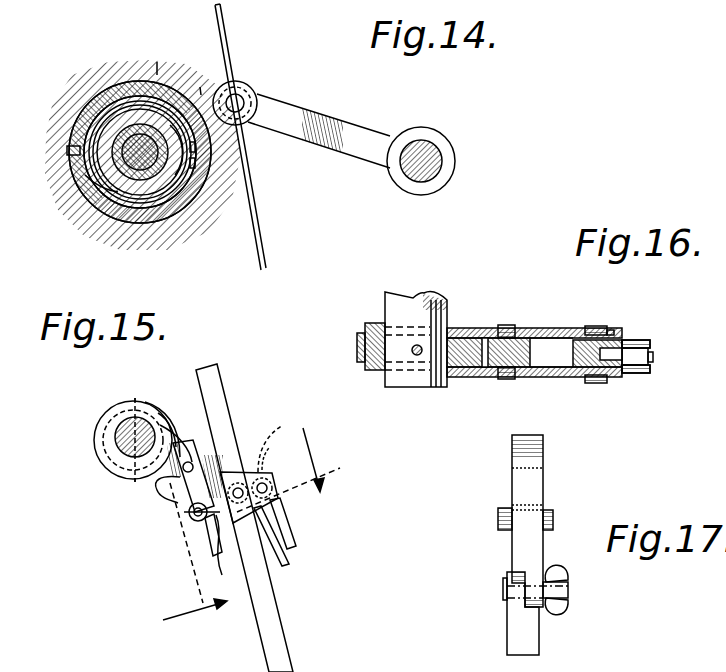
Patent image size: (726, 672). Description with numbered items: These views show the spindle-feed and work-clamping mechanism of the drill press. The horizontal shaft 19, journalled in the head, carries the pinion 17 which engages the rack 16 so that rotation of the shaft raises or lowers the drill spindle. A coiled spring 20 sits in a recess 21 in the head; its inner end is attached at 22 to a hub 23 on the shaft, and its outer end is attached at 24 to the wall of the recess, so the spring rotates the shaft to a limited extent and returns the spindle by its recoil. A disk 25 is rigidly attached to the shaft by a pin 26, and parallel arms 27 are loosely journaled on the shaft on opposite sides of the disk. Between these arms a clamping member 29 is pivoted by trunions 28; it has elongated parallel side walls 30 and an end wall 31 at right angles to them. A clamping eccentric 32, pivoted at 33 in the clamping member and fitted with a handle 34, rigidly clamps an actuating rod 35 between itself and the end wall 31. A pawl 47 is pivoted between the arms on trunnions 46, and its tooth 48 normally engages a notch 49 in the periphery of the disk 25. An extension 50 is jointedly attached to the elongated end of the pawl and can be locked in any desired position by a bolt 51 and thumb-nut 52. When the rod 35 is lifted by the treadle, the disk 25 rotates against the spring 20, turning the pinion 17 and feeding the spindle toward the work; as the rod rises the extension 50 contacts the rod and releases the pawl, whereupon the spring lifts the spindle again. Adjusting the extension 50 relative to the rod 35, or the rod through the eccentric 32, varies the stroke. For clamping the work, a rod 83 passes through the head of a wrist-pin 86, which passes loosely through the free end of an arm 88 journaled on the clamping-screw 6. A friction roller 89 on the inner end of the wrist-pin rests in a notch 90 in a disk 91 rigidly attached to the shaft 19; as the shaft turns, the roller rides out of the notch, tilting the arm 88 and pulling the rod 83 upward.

In FIG. 14, the clamping-screw 6 is at (427, 147).
In FIG. 15, the rack 16 is at (302, 470).
In FIG. 15, the pinion 17 is at (195, 562).
In FIG. 14, the horizontal shaft 19 is at (112, 143).
In FIG. 16, the horizontal shaft 19 is at (423, 292).
In FIG. 15, the horizontal shaft 19 is at (120, 430).
In FIG. 14, the coiled spring 20 is at (118, 118).
In FIG. 14, the recess 21 is at (103, 190).
In FIG. 14, the inner end attachment of spring 22 is at (172, 170).
In FIG. 14, the hub 23 is at (144, 126).
In FIG. 14, the outer end attachment of spring 24 is at (222, 165).
In FIG. 16, the disk 25 is at (360, 342).
In FIG. 15, the disk 25 is at (98, 454).
In FIG. 16, the pin 26 is at (414, 357).
In FIG. 15, the pin 26 is at (158, 470).
In FIG. 16, the parallel arms 27 is at (550, 328).
In FIG. 15, the parallel arms 27 is at (221, 467).
In FIG. 16, the trunions 28 is at (597, 327).
In FIG. 15, the trunions 28 is at (239, 488).
In FIG. 16, the clamping member 29 is at (675, 343).
In FIG. 15, the clamping member 29 is at (280, 457).
In FIG. 16, the side walls 30 is at (622, 337).
In FIG. 15, the side walls 30 is at (277, 486).
In FIG. 16, the end wall 31 is at (560, 365).
In FIG. 15, the end wall 31 is at (223, 553).
In FIG. 16, the clamping eccentric 32 is at (653, 355).
In FIG. 15, the clamping eccentric 32 is at (278, 441).
In FIG. 16, the pivot of eccentric 33 is at (637, 335).
In FIG. 15, the pivot of eccentric 33 is at (278, 553).
In FIG. 15, the handle 34 is at (297, 547).
In FIG. 16, the actuating rod 35 is at (575, 327).
In FIG. 15, the actuating rod 35 is at (287, 644).
In FIG. 16, the trunnions 46 is at (510, 327).
In FIG. 15, the trunnions 46 is at (187, 462).
In FIG. 17, the trunnions 46 is at (500, 517).
In FIG. 16, the pawl 47 is at (482, 367).
In FIG. 15, the pawl 47 is at (210, 460).
In FIG. 17, the pawl 47 is at (520, 487).
In FIG. 15, the tooth 48 is at (158, 410).
In FIG. 17, the tooth 48 is at (543, 447).
In FIG. 15, the notch 49 is at (163, 413).
In FIG. 15, the extension 50 is at (207, 572).
In FIG. 17, the extension 50 is at (518, 630).
In FIG. 15, the bolt 51 is at (210, 548).
In FIG. 17, the bolt 51 is at (503, 585).
In FIG. 15, the thumb-nut 52 is at (190, 522).
In FIG. 17, the thumb-nut 52 is at (560, 573).
In FIG. 14, the rod 83 is at (263, 230).
In FIG. 14, the wrist-pin 86 is at (238, 100).
In FIG. 14, the arm 88 is at (343, 157).
In FIG. 14, the friction roller 89 is at (243, 80).
In FIG. 14, the notch 90 is at (200, 87).
In FIG. 14, the disk 91 is at (157, 62).